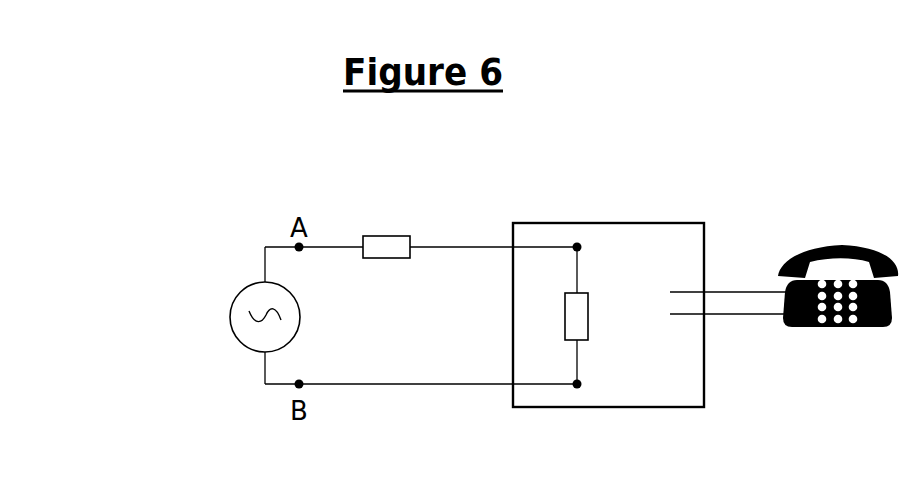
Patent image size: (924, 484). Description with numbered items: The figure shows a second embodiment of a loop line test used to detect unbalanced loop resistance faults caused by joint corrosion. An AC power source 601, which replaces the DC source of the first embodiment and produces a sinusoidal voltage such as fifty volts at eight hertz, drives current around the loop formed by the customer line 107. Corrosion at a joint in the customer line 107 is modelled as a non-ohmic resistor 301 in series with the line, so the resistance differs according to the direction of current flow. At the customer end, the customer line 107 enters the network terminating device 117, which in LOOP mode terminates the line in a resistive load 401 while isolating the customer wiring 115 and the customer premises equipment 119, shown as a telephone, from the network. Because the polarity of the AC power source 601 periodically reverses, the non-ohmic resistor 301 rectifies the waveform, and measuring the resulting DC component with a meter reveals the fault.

The AC power source 601 is at (242, 290).
The non-ohmic resistor 301 is at (388, 236).
The resistive load 401 is at (590, 315).
The network terminating device 117 is at (610, 408).
The customer premises equipment 119 is at (843, 245).
The customer wiring 115 is at (748, 315).
The customer line 107 is at (435, 385).